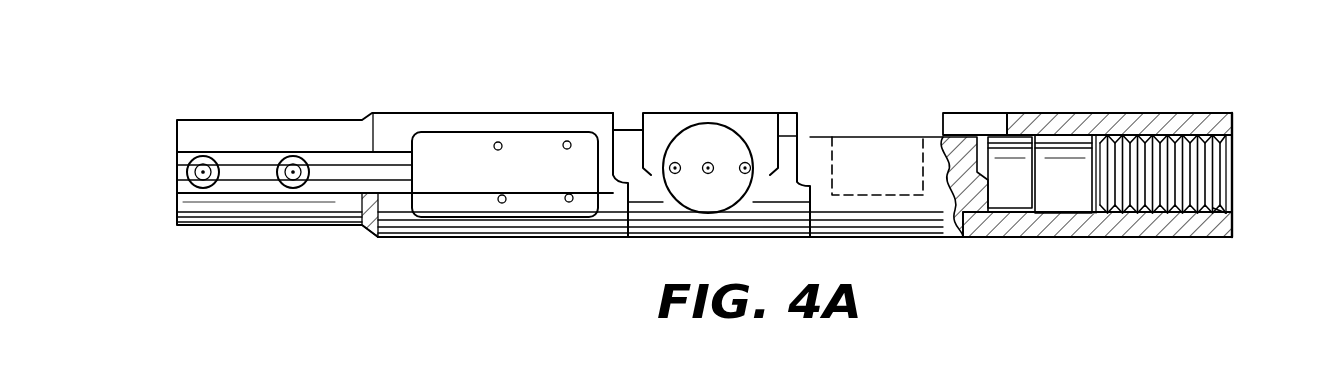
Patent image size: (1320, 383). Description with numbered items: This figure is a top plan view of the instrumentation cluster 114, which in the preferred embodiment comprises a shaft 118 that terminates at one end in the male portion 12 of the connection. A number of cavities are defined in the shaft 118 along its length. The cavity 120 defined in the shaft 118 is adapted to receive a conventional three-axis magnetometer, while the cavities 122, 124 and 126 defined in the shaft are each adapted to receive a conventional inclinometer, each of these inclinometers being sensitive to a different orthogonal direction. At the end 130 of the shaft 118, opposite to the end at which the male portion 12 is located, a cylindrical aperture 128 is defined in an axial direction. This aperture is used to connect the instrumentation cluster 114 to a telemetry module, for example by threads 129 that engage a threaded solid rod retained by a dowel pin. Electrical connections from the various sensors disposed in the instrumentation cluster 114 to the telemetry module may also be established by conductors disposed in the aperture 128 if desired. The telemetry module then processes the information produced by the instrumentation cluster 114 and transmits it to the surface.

The male portion 12 is at (266, 103).
The instrumentation cluster 114 is at (587, 252).
The shaft 118 is at (903, 237).
The cavity 120 is at (523, 155).
The cavity 122 is at (718, 142).
The cavity 124 is at (878, 132).
The cavity 126 is at (1012, 157).
The cylindrical aperture 128 is at (1232, 162).
The threads 129 is at (1213, 208).
The end 130 is at (1178, 113).